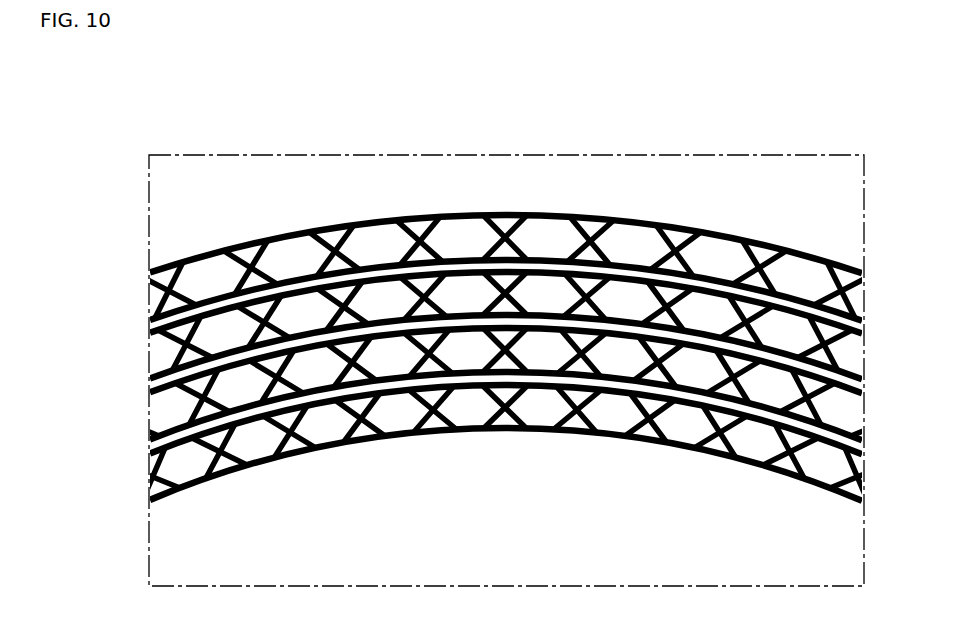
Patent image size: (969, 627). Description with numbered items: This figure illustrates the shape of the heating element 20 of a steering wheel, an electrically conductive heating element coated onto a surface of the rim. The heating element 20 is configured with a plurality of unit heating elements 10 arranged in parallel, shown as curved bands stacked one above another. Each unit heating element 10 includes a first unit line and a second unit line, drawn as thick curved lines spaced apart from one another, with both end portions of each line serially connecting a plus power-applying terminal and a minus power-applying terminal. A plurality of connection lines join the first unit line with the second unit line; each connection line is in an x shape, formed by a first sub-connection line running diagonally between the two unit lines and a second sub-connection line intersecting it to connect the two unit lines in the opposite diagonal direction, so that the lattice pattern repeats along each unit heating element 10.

The unit heating element 10 is at (139, 296).
The heating element 20 is at (403, 194).